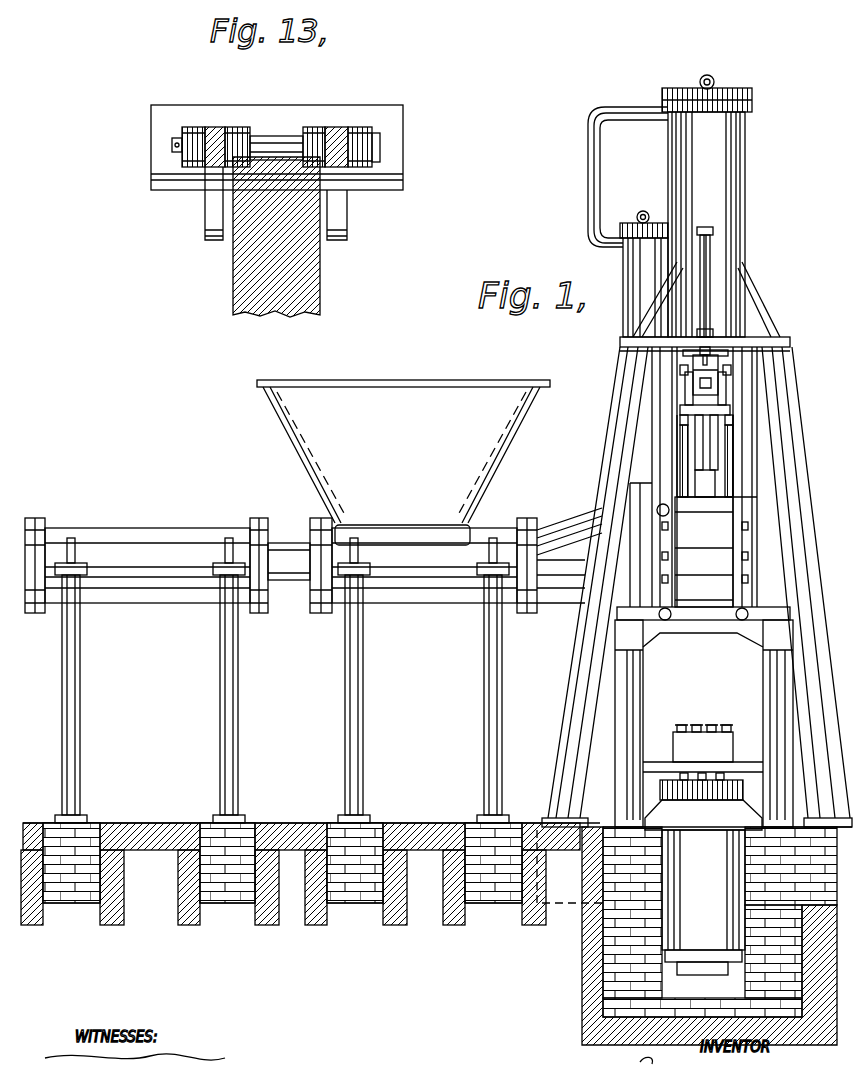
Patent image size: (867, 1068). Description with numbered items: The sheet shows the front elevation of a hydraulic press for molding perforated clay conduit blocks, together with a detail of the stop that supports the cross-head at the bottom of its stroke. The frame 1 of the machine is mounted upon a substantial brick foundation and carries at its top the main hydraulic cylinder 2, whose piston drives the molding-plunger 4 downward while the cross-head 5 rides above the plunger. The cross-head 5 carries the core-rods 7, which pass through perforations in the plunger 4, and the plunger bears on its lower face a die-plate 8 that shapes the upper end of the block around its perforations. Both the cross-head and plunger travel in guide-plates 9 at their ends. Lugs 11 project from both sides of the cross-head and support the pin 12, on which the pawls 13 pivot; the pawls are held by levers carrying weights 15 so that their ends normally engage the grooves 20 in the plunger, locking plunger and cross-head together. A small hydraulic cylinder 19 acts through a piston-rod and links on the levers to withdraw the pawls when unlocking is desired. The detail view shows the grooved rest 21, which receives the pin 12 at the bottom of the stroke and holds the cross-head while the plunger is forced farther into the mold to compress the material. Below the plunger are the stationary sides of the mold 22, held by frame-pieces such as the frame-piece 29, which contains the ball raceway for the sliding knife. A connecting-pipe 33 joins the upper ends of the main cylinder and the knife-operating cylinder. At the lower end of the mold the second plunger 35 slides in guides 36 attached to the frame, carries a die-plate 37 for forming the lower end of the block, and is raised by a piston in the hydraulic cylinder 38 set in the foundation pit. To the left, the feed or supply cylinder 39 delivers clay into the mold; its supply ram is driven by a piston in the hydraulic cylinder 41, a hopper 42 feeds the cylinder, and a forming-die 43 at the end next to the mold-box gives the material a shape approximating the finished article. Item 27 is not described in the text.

In FIG. 1, the frame 1 is at (581, 698).
In FIG. 1, the main hydraulic cylinder 2 is at (745, 206).
In FIG. 1, the molding-plunger 4 is at (680, 409).
In FIG. 13, the cross-head 5 is at (281, 112).
In FIG. 1, the cross-head 5 is at (693, 380).
In FIG. 1, the core-rods 7 is at (678, 465).
In FIG. 1, the die-plate 8 is at (735, 426).
In FIG. 1, the guide-plates 9 is at (672, 441).
In FIG. 13, the lugs 11 is at (212, 127).
In FIG. 1, the lugs 11 is at (680, 370).
In FIG. 13, the pin 12 is at (380, 151).
In FIG. 13, the pawls 13 is at (205, 203).
In FIG. 1, the pawls 13 is at (685, 395).
In FIG. 1, the weights 15 is at (718, 360).
In FIG. 1, the small hydraulic cylinder 19 is at (712, 254).
In FIG. 1, the grooves 20 is at (680, 419).
In FIG. 13, the grooved rest 21 is at (320, 290).
In FIG. 1, the grooved rest 21 is at (705, 484).
In FIG. 1, the stationary sides of the mold 22 is at (704, 552).
In FIG. 1, the auxiliary cylinder 27 is at (627, 304).
In FIG. 1, the frame-piece 29 is at (668, 556).
In FIG. 1, the connecting-pipe 33 is at (591, 197).
In FIG. 1, the second plunger 35 is at (703, 747).
In FIG. 1, the guides or ways 36 is at (760, 679).
In FIG. 1, the die-plate 37 is at (710, 727).
In FIG. 1, the hydraulic cylinder 38 is at (703, 874).
In FIG. 1, the feed or supply cylinder 39 is at (446, 605).
In FIG. 1, the hydraulic cylinder 41 is at (146, 559).
In FIG. 1, the hopper 42 is at (403, 462).
In FIG. 1, the forming-die 43 is at (586, 527).